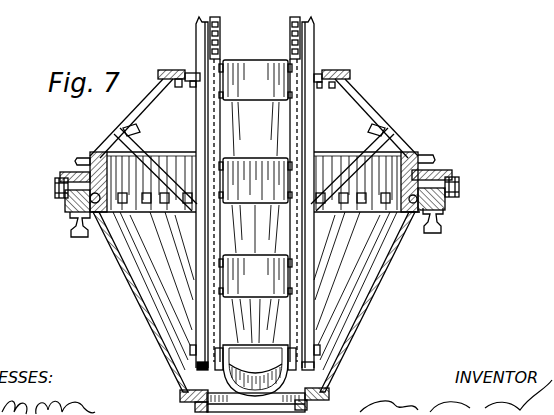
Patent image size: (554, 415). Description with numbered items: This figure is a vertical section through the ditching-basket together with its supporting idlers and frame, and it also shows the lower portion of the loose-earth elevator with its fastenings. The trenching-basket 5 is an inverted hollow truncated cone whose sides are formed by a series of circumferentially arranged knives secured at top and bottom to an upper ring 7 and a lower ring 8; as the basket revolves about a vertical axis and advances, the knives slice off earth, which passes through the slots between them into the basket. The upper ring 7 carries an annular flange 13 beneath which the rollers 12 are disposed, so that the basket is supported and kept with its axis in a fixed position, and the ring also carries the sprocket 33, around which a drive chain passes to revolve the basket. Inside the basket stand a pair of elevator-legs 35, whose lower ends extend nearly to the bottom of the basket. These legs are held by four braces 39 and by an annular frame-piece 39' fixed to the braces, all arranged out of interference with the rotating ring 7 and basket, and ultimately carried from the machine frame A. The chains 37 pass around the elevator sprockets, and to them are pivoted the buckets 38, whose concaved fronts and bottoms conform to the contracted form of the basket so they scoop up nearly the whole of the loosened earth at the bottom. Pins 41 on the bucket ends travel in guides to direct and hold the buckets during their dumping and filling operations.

The trenching-basket 5 is at (363, 315).
The upper ring 7 is at (402, 226).
The lower ring 8 is at (318, 398).
The rollers 12 is at (57, 185).
The annular flange 13 is at (65, 177).
The sprocket 33 is at (92, 160).
The elevator-legs 35 is at (311, 128).
The chains 37 is at (291, 40).
The buckets 38 is at (255, 228).
The braces 39 is at (145, 140).
The annular frame-piece 39' is at (364, 127).
The pins 41 is at (225, 100).
The frame A is at (75, 230).